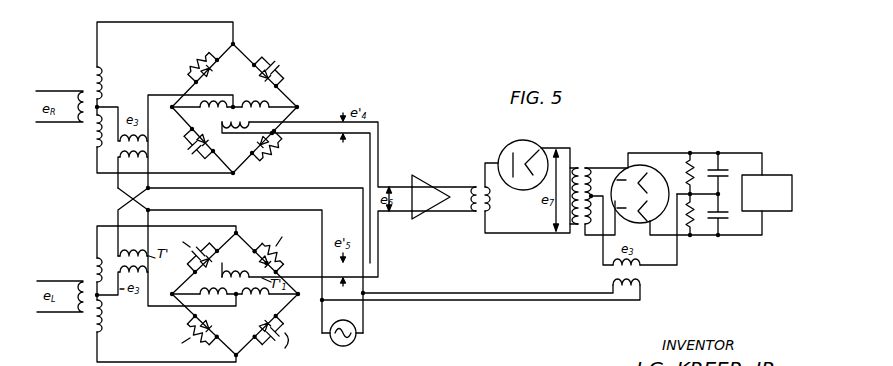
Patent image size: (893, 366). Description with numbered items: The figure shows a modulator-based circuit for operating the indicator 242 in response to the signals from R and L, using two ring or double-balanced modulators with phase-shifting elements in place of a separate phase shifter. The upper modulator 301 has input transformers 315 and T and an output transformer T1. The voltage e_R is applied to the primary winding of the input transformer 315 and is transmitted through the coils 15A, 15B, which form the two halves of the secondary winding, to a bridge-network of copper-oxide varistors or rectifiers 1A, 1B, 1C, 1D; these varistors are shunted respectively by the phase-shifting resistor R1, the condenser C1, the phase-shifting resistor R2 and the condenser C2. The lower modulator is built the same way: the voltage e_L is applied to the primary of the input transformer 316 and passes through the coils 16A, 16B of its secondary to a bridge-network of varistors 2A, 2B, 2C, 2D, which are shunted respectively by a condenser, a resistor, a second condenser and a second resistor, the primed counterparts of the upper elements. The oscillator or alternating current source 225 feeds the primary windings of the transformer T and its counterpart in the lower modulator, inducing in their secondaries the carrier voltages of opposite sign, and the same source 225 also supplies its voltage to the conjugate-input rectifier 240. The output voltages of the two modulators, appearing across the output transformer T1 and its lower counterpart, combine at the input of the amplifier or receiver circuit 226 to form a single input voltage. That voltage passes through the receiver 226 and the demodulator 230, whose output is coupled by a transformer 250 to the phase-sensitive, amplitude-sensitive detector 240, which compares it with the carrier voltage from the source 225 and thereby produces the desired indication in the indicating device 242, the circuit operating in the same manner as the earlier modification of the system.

The input transformer 315 is at (92, 68).
The coil 15A is at (101, 78).
The coil 15B is at (92, 140).
The modulator 301 is at (241, 53).
The copper-oxide varistor 1A is at (204, 60).
The copper-oxide varistor 1B is at (278, 63).
The copper-oxide varistor 1C is at (267, 146).
The copper-oxide varistor 1D is at (197, 148).
The phase-shifting resistor R1 is at (200, 57).
The phase-shifting resistor R2 is at (279, 150).
The condenser C1 is at (285, 62).
The condenser C2 is at (185, 151).
The input transformer T is at (149, 138).
The output transformer T1 is at (221, 117).
The input transformer 316 is at (92, 316).
The coil 16A is at (96, 262).
The coil 16B is at (104, 320).
The copper-oxide varistor 2A is at (193, 257).
The copper-oxide varistor 2B is at (263, 248).
The copper-oxide varistor 2C is at (274, 332).
The copper-oxide varistor 2D is at (213, 327).
The oscillator or alternating current source 225 is at (353, 341).
The amplifier or receiver circuit 226 is at (424, 179).
The demodulator 230 is at (518, 142).
The output transformer 250 is at (588, 152).
The conjugate-input rectifier 240 is at (641, 162).
The indicator 242 is at (798, 166).